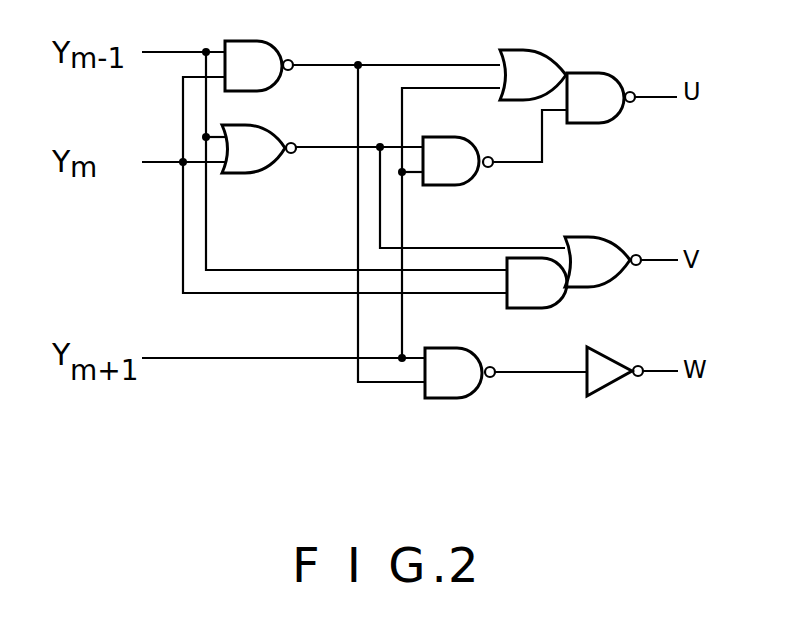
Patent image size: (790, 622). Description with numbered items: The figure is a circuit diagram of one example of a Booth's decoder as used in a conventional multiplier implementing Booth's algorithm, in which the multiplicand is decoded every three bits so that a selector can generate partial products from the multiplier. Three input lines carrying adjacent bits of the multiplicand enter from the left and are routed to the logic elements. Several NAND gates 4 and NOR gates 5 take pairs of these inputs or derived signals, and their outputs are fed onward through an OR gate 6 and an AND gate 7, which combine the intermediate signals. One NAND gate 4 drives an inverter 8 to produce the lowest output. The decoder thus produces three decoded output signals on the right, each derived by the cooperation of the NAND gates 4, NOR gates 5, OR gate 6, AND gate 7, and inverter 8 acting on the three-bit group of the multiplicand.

The NAND gate 4 is at (278, 41).
The NOR gate 5 is at (268, 175).
The OR gate 6 is at (548, 50).
The AND gate 7 is at (535, 310).
The inverter 8 is at (618, 387).